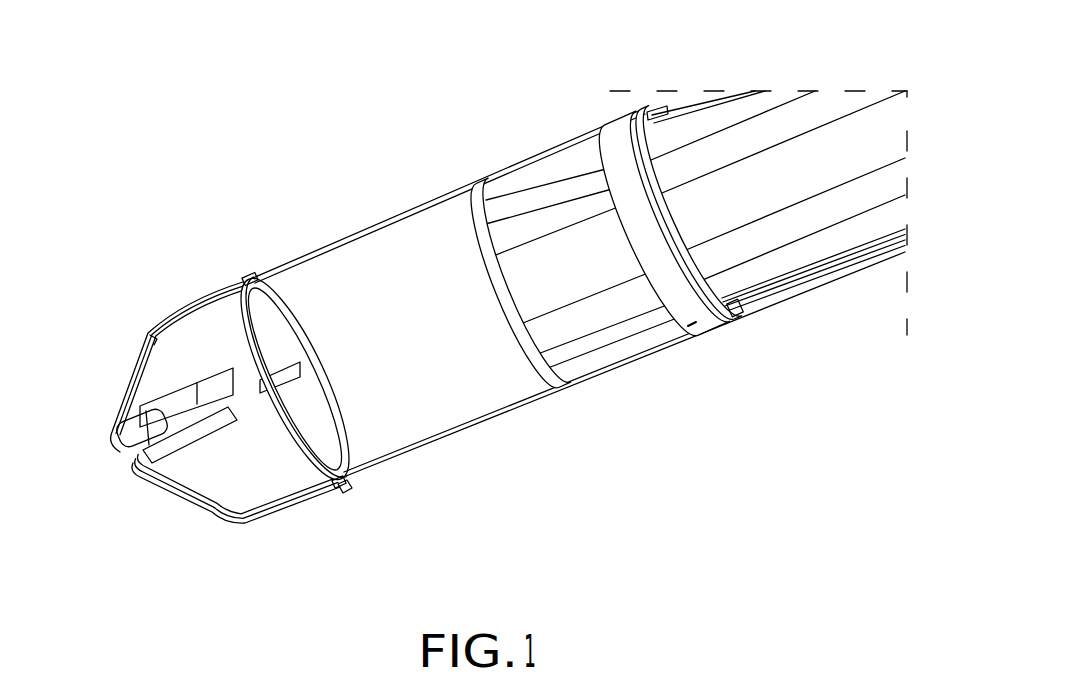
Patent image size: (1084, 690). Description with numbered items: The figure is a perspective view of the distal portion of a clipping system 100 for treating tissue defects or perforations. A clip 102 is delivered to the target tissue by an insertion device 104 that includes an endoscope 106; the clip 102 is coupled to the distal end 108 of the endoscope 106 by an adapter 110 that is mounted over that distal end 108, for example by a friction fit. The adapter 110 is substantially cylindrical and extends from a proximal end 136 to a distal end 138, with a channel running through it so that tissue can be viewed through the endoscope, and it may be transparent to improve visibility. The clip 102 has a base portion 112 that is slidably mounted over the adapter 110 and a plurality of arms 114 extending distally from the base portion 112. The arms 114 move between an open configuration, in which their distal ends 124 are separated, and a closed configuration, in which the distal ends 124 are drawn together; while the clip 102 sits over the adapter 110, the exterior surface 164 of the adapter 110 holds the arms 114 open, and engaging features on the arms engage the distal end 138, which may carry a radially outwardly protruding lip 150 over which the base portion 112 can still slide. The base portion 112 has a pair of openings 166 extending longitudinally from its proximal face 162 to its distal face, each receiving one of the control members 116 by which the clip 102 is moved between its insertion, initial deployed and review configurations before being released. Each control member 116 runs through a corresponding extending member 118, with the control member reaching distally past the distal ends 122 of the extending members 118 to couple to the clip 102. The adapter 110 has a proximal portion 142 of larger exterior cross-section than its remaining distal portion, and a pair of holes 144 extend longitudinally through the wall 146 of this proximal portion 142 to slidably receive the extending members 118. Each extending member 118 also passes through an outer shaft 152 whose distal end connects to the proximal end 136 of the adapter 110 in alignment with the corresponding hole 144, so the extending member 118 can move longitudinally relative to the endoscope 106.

The clipping system 100 is at (501, 309).
The clip 102 is at (225, 414).
The insertion device 104 is at (758, 224).
The endoscope 106 is at (803, 206).
The distal end 108 is at (707, 265).
The adapter 110 is at (570, 327).
The base portion 112 is at (233, 292).
The arms 114 is at (210, 392).
The control members 116 is at (334, 486).
The extending members 118 is at (579, 319).
The distal ends 122 is at (300, 366).
The distal ends 124 is at (133, 460).
The proximal end 136 is at (637, 213).
The distal end 138 is at (481, 202).
The proximal portion 142 is at (692, 322).
The holes 144 is at (718, 214).
The wall 146 is at (717, 314).
The lip 150 is at (560, 390).
The outer shaft 152 is at (857, 265).
The proximal face 162 is at (340, 494).
The exterior surface 164 is at (579, 270).
The openings 166 is at (253, 282).